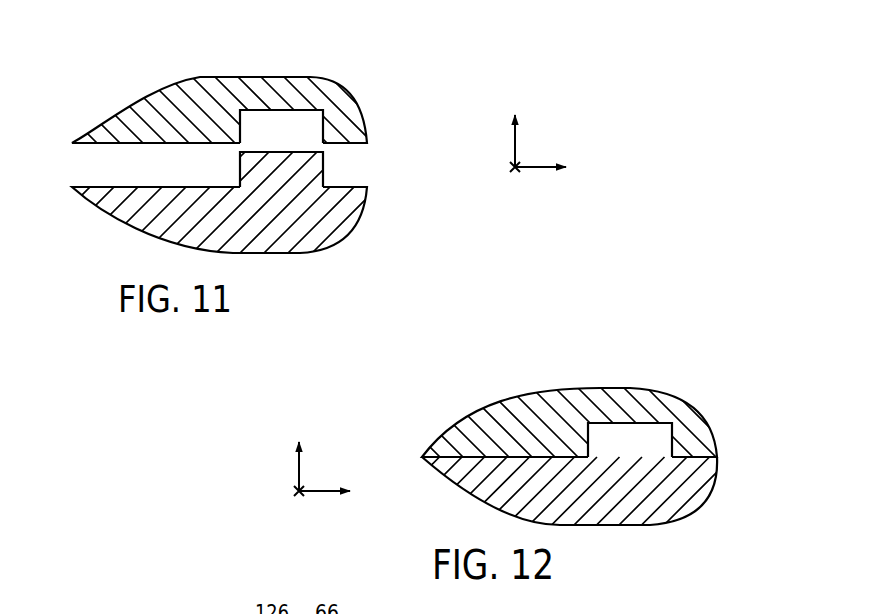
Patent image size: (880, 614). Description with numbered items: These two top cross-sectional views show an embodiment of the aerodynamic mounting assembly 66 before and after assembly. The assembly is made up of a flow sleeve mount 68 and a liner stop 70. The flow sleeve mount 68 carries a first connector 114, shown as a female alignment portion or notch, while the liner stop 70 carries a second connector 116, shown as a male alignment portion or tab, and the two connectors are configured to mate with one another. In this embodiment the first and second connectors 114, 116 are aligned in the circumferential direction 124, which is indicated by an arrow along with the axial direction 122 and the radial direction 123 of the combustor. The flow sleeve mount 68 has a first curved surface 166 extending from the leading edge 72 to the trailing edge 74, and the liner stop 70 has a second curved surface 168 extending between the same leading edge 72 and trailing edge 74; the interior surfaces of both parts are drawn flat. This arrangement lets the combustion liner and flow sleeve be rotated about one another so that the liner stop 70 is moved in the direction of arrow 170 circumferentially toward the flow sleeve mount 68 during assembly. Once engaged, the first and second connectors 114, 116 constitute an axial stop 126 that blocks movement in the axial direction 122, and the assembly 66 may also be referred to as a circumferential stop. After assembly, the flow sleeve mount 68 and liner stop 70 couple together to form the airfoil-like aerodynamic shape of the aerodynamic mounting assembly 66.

In FIG. 11, the aerodynamic mounting assembly 66 is at (339, 56).
In FIG. 12, the aerodynamic mounting assembly 66 is at (688, 368).
In FIG. 11, the flow sleeve mount 68 is at (213, 86).
In FIG. 12, the flow sleeve mount 68 is at (578, 376).
In FIG. 11, the liner stop 70 is at (230, 228).
In FIG. 12, the liner stop 70 is at (575, 494).
In FIG. 11, the leading edge 72 is at (376, 160).
In FIG. 12, the leading edge 72 is at (725, 457).
In FIG. 11, the trailing edge 74 is at (67, 157).
In FIG. 12, the trailing edge 74 is at (417, 455).
In FIG. 11, the first connector 114 is at (274, 110).
In FIG. 12, the first connector 114 is at (628, 398).
In FIG. 11, the second connector 116 is at (324, 167).
In FIG. 12, the second connector 116 is at (657, 435).
In FIG. 11, the axial direction 122 is at (533, 168).
In FIG. 12, the axial direction 122 is at (322, 495).
In FIG. 11, the radial direction 123 is at (512, 167).
In FIG. 12, the radial direction 123 is at (297, 491).
In FIG. 11, the circumferential direction 124 is at (516, 147).
In FIG. 12, the circumferential direction 124 is at (300, 480).
In FIG. 12, the axial stop 126 is at (652, 376).
In FIG. 11, the first curved surface 166 is at (184, 74).
In FIG. 12, the first curved surface 166 is at (580, 386).
In FIG. 11, the second curved surface 168 is at (266, 268).
In FIG. 12, the second curved surface 168 is at (605, 536).
In FIG. 11, the arrow 170 is at (282, 117).